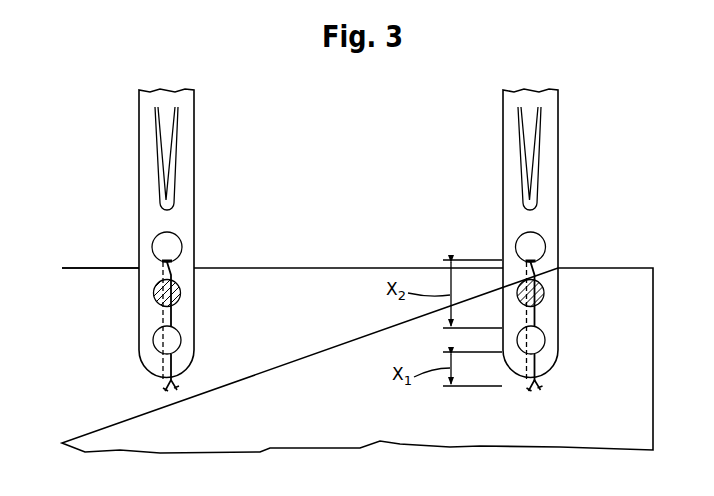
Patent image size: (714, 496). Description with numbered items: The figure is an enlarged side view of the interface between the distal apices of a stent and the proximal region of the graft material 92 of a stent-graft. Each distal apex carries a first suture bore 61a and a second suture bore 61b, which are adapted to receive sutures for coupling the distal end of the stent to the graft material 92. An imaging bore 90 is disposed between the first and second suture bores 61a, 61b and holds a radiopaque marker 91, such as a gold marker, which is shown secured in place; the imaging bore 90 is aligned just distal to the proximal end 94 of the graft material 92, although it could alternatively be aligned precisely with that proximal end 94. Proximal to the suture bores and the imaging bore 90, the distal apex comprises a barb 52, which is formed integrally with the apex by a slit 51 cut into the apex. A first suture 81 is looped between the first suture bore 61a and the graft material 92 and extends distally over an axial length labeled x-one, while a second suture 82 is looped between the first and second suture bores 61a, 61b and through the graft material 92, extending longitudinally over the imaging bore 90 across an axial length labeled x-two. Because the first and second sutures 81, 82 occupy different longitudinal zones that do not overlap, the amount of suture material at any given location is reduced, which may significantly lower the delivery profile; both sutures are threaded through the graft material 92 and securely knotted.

The slit 51 is at (164, 208).
The barb 52 is at (168, 177).
The first suture bore 61a is at (172, 343).
The second suture bore 61b is at (153, 248).
The first suture 81 is at (162, 381).
The second suture 82 is at (173, 273).
The imaging bore 90 is at (181, 295).
The radiopaque marker 91 is at (162, 290).
The graft material 92 is at (82, 410).
The proximal end of the graft material 94 is at (72, 292).